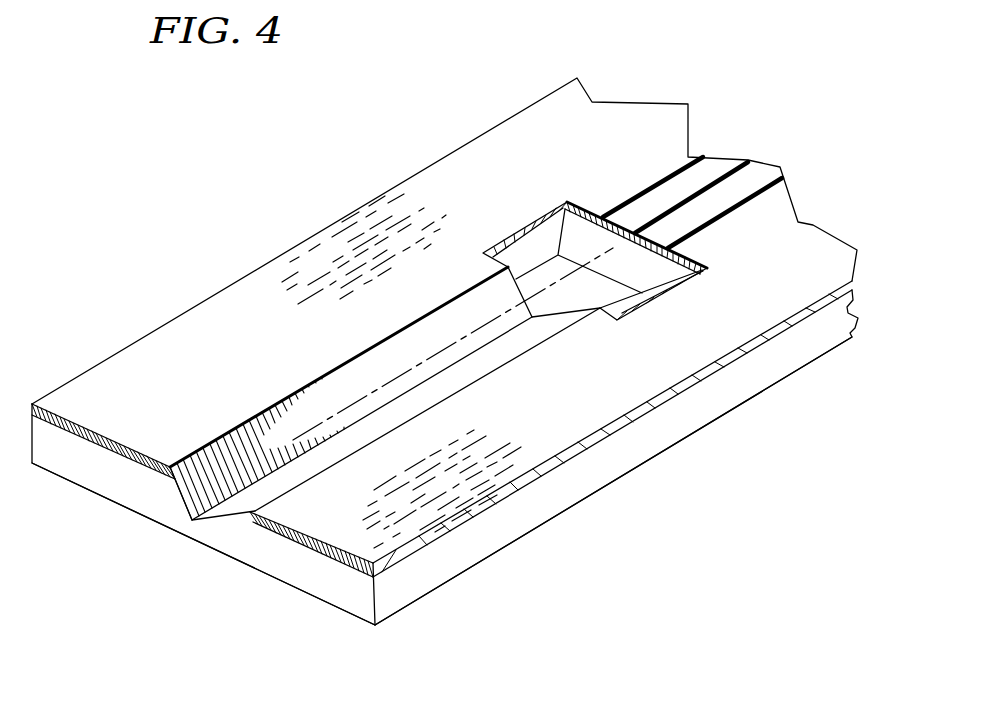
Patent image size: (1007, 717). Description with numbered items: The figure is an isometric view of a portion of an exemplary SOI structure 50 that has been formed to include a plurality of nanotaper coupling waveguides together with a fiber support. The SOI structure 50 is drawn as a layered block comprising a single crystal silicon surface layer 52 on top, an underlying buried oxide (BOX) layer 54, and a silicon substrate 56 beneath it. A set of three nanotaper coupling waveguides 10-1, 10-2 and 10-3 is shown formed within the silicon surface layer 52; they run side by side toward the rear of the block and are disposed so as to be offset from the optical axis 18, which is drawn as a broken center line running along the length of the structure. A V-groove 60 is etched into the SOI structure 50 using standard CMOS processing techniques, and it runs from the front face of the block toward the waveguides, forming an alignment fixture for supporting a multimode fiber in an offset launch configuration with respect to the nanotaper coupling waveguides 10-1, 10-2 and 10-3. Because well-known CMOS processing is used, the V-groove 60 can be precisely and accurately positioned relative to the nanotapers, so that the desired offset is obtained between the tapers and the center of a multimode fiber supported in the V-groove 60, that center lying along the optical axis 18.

The SOI structure 50 is at (378, 192).
The single crystal silicon surface layer 52 is at (108, 370).
The buried oxide (BOX) layer 54 is at (452, 528).
The silicon substrate 56 is at (313, 578).
The V-groove 60 is at (267, 423).
The optical axis 18 is at (417, 365).
The nanotaper coupling waveguide 10-1 is at (625, 203).
The nanotaper coupling waveguide 10-2 is at (683, 200).
The nanotaper coupling waveguide 10-3 is at (720, 216).